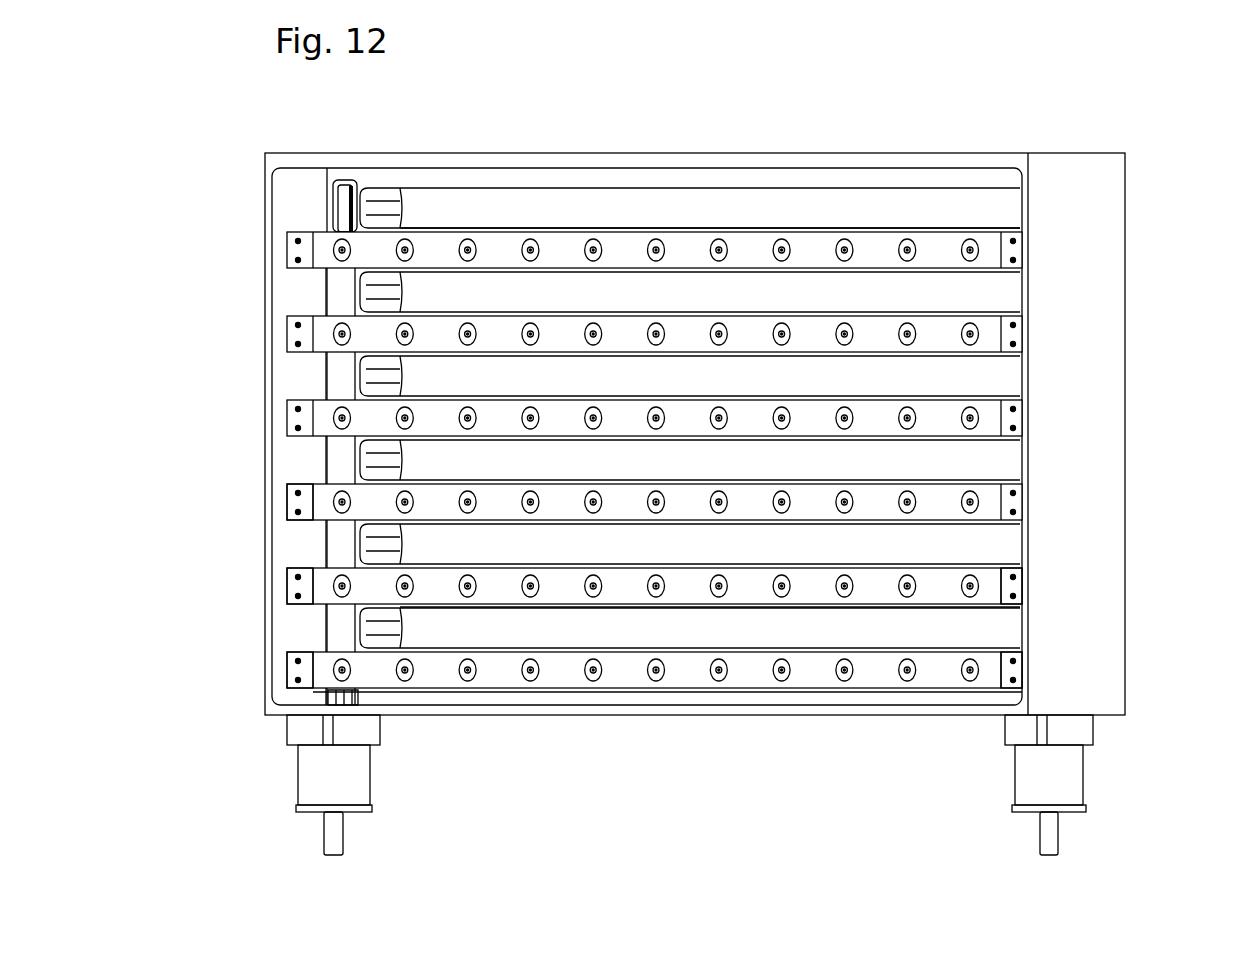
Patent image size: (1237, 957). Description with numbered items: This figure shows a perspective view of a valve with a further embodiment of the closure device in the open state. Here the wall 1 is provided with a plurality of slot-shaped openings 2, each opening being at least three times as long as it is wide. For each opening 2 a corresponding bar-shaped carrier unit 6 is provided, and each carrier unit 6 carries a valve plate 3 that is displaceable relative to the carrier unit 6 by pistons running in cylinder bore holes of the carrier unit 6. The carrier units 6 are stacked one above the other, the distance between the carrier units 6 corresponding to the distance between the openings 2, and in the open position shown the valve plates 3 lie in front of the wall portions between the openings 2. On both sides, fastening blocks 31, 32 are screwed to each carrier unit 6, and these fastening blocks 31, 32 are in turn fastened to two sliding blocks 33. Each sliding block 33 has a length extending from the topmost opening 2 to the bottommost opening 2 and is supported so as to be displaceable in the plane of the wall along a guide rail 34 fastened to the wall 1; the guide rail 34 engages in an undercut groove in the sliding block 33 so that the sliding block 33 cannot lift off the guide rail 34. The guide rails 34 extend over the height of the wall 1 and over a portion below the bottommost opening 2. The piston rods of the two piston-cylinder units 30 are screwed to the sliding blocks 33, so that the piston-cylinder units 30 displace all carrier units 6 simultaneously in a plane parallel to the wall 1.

The wall 1 is at (823, 175).
The slot-shaped opening 2 is at (613, 296).
The valve plate 3 is at (752, 231).
The carrier unit 6 is at (690, 228).
The piston-cylinder unit 30 is at (383, 788).
The fastening block 31 is at (290, 503).
The fastening block 32 is at (1007, 598).
The sliding block 33 is at (337, 293).
The guide rail 34 is at (345, 202).